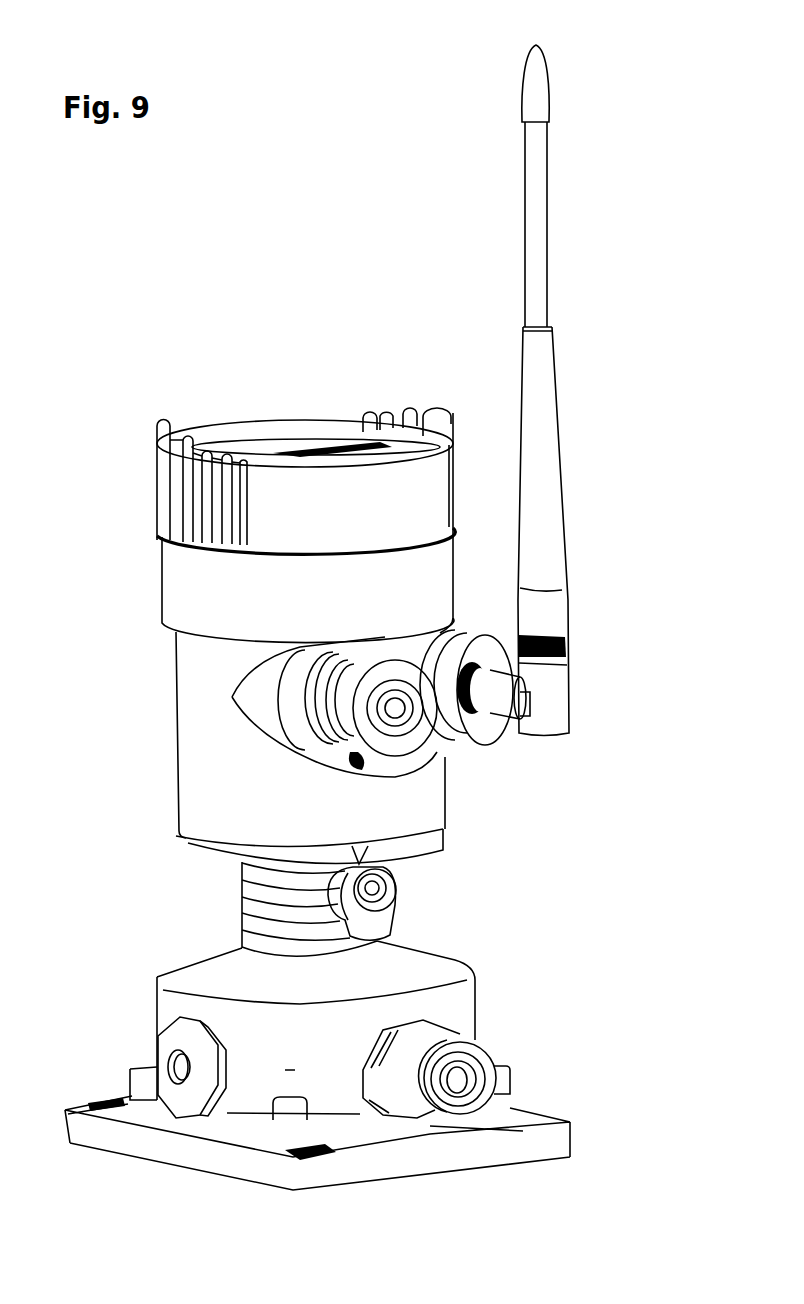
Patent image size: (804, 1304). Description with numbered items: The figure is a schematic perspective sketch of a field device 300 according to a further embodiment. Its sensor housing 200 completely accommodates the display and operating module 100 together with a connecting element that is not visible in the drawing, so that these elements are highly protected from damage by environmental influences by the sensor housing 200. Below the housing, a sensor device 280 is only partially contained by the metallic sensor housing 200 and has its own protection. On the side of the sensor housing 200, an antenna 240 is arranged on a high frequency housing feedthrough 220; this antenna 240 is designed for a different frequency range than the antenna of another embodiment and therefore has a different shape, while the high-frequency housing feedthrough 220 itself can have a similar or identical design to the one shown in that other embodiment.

The field device 300 is at (72, 356).
The display and operating module 100 is at (265, 403).
The sensor housing 200 is at (210, 783).
The high frequency housing feedthrough 220 is at (486, 761).
The antenna 240 is at (540, 427).
The sensor device 280 is at (210, 975).